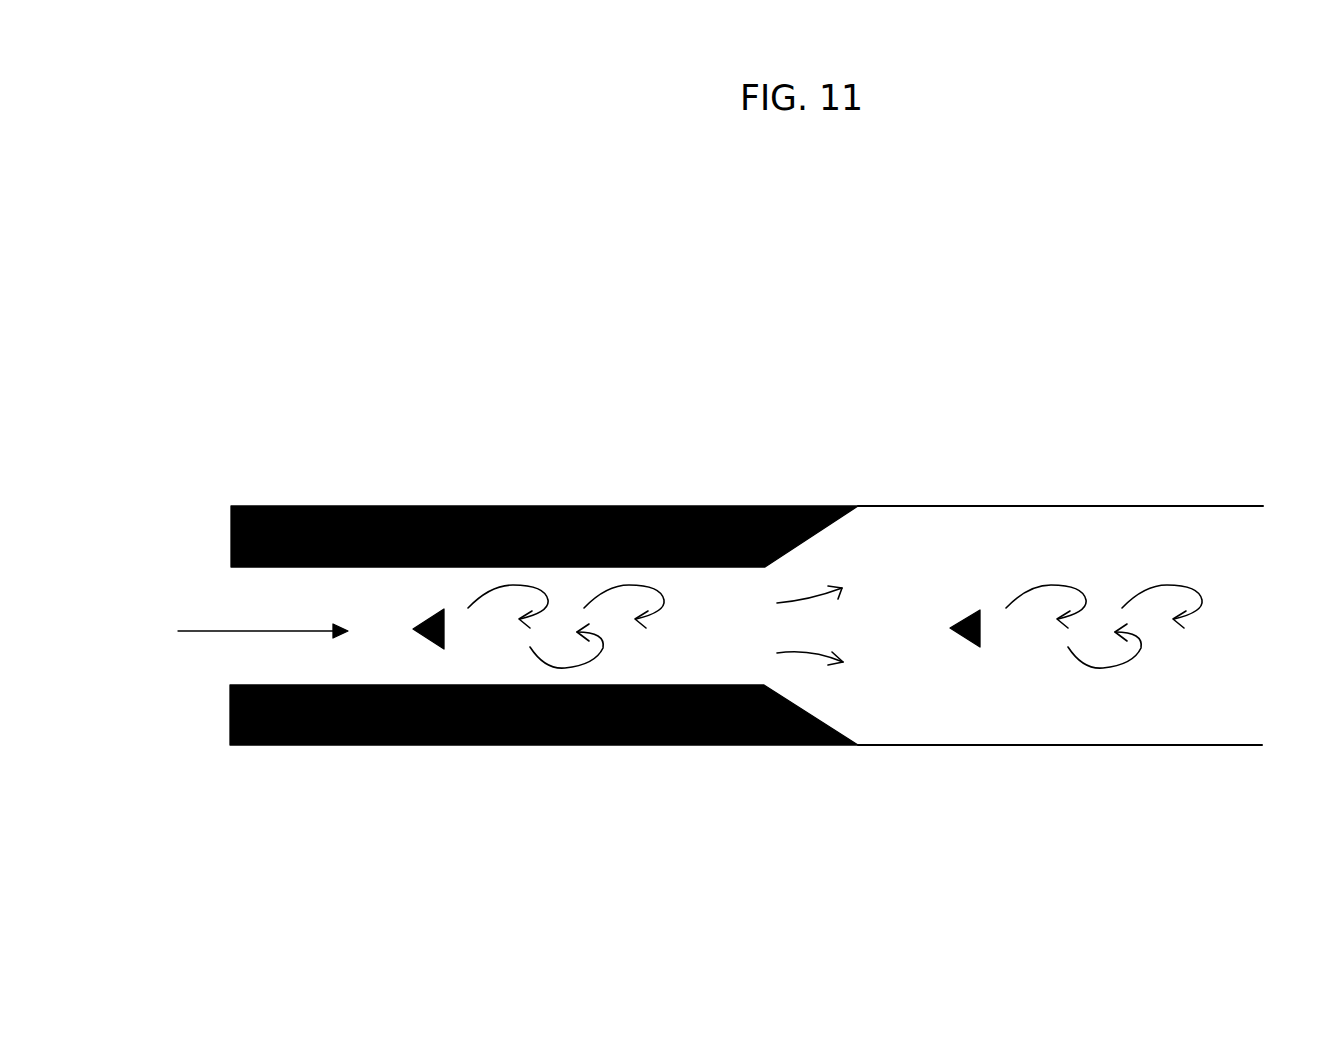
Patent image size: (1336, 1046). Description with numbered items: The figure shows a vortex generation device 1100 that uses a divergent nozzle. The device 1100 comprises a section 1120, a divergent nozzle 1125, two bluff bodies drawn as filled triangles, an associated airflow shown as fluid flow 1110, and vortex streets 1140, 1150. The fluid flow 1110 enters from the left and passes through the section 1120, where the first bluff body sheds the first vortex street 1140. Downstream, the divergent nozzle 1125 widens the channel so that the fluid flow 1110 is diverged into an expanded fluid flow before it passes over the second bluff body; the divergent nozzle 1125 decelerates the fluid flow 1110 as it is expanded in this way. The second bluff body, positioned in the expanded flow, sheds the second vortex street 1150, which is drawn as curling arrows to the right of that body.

The vortex generation device 1100 is at (831, 341).
The fluid flow 1110 is at (215, 631).
The section 1120 is at (347, 506).
The divergent nozzle 1125 is at (828, 745).
The vortex street 1140 is at (672, 625).
The vortex street 1150 is at (1103, 580).